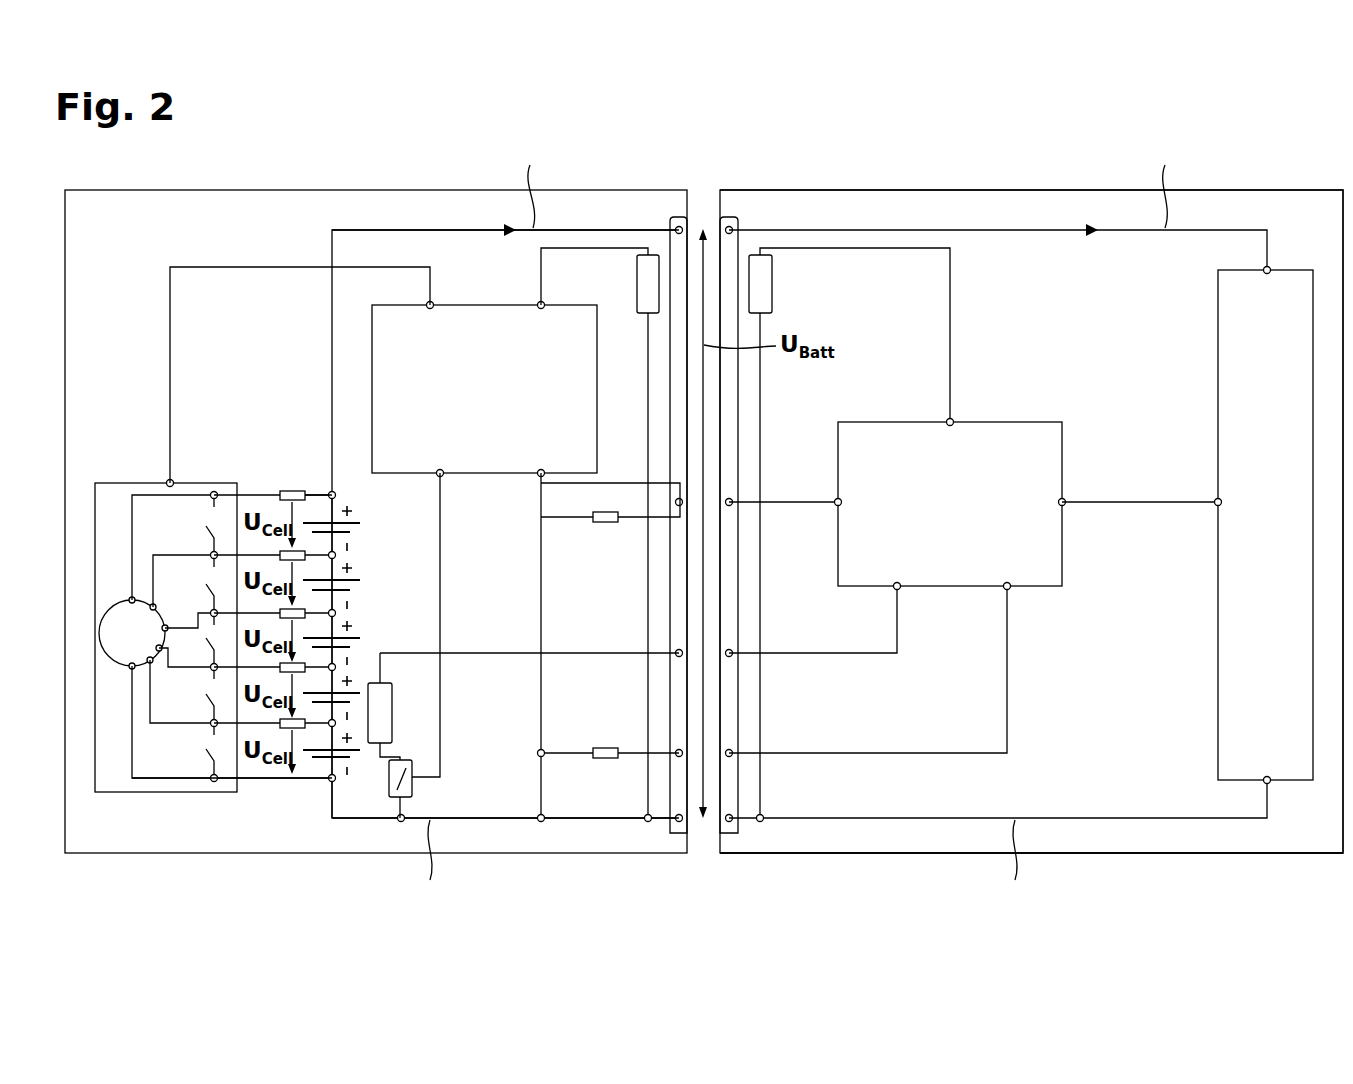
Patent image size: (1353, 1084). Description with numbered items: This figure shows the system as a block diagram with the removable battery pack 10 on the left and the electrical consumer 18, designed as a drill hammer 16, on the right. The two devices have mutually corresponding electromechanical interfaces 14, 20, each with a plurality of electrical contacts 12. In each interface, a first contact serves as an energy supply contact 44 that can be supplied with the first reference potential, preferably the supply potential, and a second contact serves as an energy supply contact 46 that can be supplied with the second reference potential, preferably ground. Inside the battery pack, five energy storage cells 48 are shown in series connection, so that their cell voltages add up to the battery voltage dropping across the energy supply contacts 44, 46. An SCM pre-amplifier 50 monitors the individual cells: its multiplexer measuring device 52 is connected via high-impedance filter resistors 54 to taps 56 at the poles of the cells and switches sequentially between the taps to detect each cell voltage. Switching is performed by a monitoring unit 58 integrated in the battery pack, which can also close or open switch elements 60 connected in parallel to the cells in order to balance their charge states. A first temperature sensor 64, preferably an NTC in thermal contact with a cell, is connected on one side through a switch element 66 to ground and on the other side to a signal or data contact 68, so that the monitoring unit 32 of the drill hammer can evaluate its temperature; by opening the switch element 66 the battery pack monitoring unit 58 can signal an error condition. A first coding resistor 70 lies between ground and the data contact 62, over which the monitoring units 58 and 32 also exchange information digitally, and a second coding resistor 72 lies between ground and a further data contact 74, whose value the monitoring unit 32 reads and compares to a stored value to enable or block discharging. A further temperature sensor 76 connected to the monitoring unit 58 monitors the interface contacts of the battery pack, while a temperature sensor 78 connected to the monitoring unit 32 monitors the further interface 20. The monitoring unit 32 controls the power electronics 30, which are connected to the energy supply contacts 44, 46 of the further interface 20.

The removable battery pack 10 is at (434, 166).
The electrical contacts 12 is at (678, 216).
The electromechanical interface 14 is at (676, 848).
The drill hammer 16 is at (1010, 166).
The electrical consumer 18 is at (1031, 475).
The electromechanical interface 20 is at (734, 848).
The power electronics 30 is at (1264, 525).
The monitoring unit 32 is at (950, 504).
The energy supply contact 44 is at (799, 202).
The energy supply contact 46 is at (799, 845).
The energy storage cells 48 is at (362, 520).
The SCM pre-amplifier 50 is at (130, 481).
The multiplexer measuring device 52 is at (215, 636).
The filter resistors 54 is at (283, 489).
The taps 56 is at (332, 493).
The monitoring unit 58 is at (484, 389).
The switch elements 60 is at (208, 638).
The signal contact or data contact 62 is at (693, 480).
The first temperature sensor 64 is at (392, 703).
The switch element 66 is at (413, 790).
The signal contact or data contact 68 is at (638, 643).
The first coding resistor 70 is at (600, 510).
The second coding resistor 72 is at (604, 746).
The signal contact or data contact 74 is at (773, 693).
The further temperature sensor 76 is at (637, 283).
The temperature sensor 78 is at (772, 272).